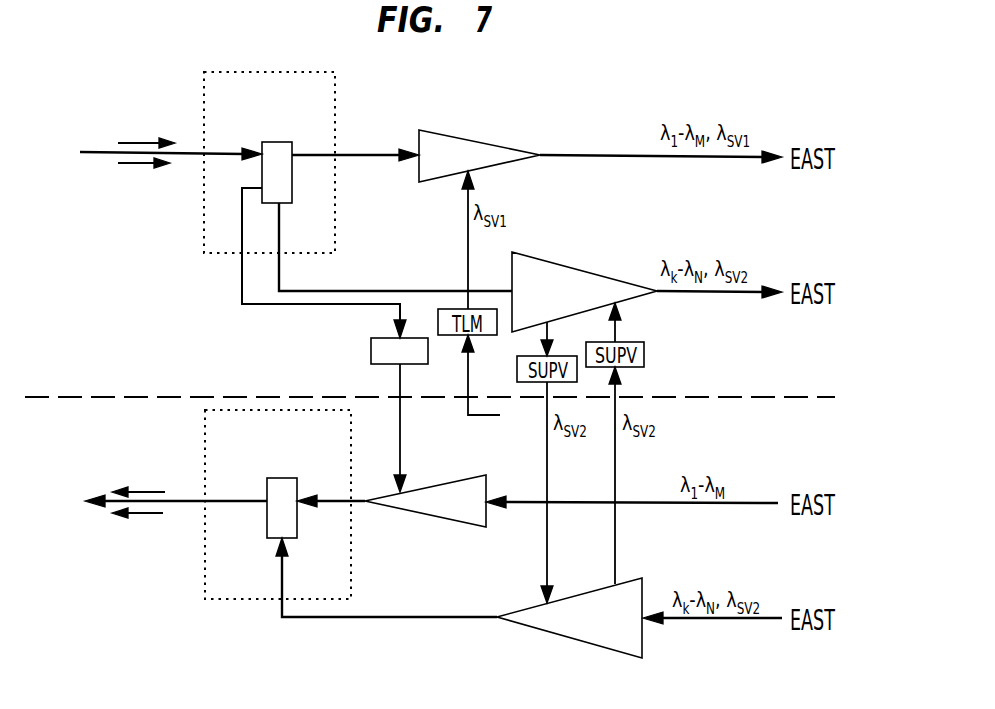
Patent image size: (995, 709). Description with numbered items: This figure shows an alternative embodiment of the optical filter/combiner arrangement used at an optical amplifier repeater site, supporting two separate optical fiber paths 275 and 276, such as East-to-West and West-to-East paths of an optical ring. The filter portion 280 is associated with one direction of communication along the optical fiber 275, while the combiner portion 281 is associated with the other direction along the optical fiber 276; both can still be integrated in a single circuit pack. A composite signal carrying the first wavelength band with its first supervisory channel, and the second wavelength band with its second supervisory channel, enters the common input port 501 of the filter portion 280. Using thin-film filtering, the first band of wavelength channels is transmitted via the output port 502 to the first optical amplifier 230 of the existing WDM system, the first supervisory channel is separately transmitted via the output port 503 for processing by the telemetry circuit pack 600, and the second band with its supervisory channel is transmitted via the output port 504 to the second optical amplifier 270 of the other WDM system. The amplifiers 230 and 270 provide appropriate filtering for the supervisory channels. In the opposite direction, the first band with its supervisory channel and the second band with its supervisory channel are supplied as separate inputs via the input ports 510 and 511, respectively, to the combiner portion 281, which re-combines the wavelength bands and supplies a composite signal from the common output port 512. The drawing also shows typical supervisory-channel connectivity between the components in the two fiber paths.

The filter portion 280 is at (270, 72).
The optical fiber path 275 is at (100, 152).
The common input port 501 is at (262, 143).
The output port 502 is at (293, 147).
The output port 503 is at (262, 188).
The output port 504 is at (282, 206).
The optical amplifier (OA-1) 230 is at (468, 140).
The optical amplifier (OA-2) 270 is at (572, 268).
The telemetry circuit pack 600 is at (370, 351).
The combiner portion 281 is at (247, 600).
The input port 510 is at (298, 495).
The input port 511 is at (277, 546).
The common output port 512 is at (266, 495).
The optical fiber path 276 is at (197, 502).